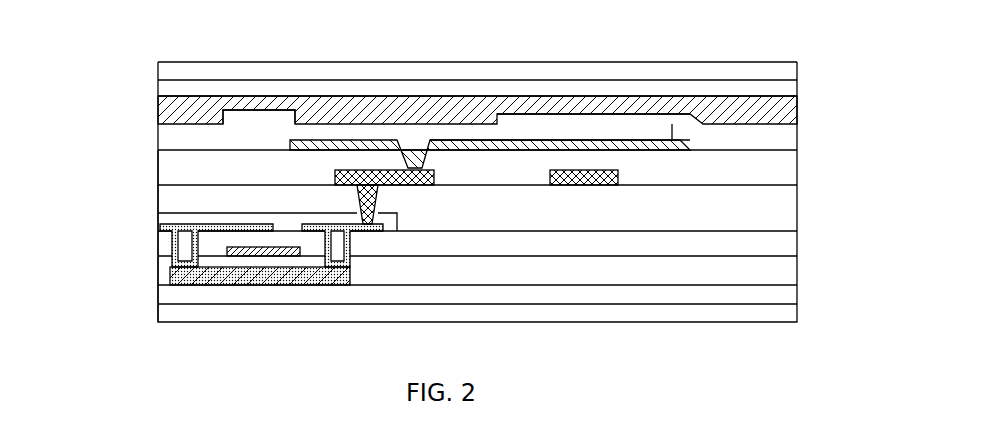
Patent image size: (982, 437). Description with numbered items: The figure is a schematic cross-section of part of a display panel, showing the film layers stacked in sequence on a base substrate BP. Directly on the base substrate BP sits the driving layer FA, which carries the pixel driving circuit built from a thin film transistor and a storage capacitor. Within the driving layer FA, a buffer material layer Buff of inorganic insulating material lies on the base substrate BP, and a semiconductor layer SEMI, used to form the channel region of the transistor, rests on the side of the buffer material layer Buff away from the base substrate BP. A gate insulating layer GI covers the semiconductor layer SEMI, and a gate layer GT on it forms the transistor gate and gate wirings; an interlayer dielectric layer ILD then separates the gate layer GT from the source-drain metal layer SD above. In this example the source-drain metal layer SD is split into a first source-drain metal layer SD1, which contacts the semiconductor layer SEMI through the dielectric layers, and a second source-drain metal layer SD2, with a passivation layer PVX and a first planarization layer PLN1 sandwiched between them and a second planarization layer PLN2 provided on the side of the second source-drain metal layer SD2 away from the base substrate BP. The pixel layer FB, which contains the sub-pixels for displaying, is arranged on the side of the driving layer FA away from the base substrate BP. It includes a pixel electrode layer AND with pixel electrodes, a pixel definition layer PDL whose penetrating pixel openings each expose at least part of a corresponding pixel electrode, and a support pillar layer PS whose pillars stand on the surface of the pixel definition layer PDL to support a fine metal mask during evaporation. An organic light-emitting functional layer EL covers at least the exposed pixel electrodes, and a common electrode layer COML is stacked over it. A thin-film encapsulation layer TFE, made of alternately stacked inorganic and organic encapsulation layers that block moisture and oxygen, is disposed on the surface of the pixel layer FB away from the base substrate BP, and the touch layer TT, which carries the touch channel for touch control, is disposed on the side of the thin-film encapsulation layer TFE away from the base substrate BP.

The touch layer TT is at (786, 72).
The thin-film encapsulation layer TFE is at (786, 86).
The common electrode layer COML is at (790, 111).
The support pillar layer PS is at (267, 118).
The organic light-emitting functional layer EL is at (557, 132).
The pixel electrode layer AND is at (653, 145).
The pixel definition layer PDL is at (413, 135).
The second planarization layer PLN2 is at (165, 158).
The second source-drain metal layer SD2 is at (336, 177).
The first planarization layer PLN1 is at (183, 190).
The passivation layer PVX is at (186, 222).
The first source-drain metal layer SD1 is at (176, 236).
The interlayer dielectric layer ILD is at (170, 239).
The gate layer GT is at (227, 250).
The gate insulating layer GI is at (170, 263).
The semiconductor layer SEMI is at (170, 276).
The buffer material layer Buff is at (183, 296).
The base substrate BP is at (183, 313).
The source-drain metal layer SD is at (111, 25).
The pixel layer FB is at (155, 96).
The driving layer FA is at (85, 160).